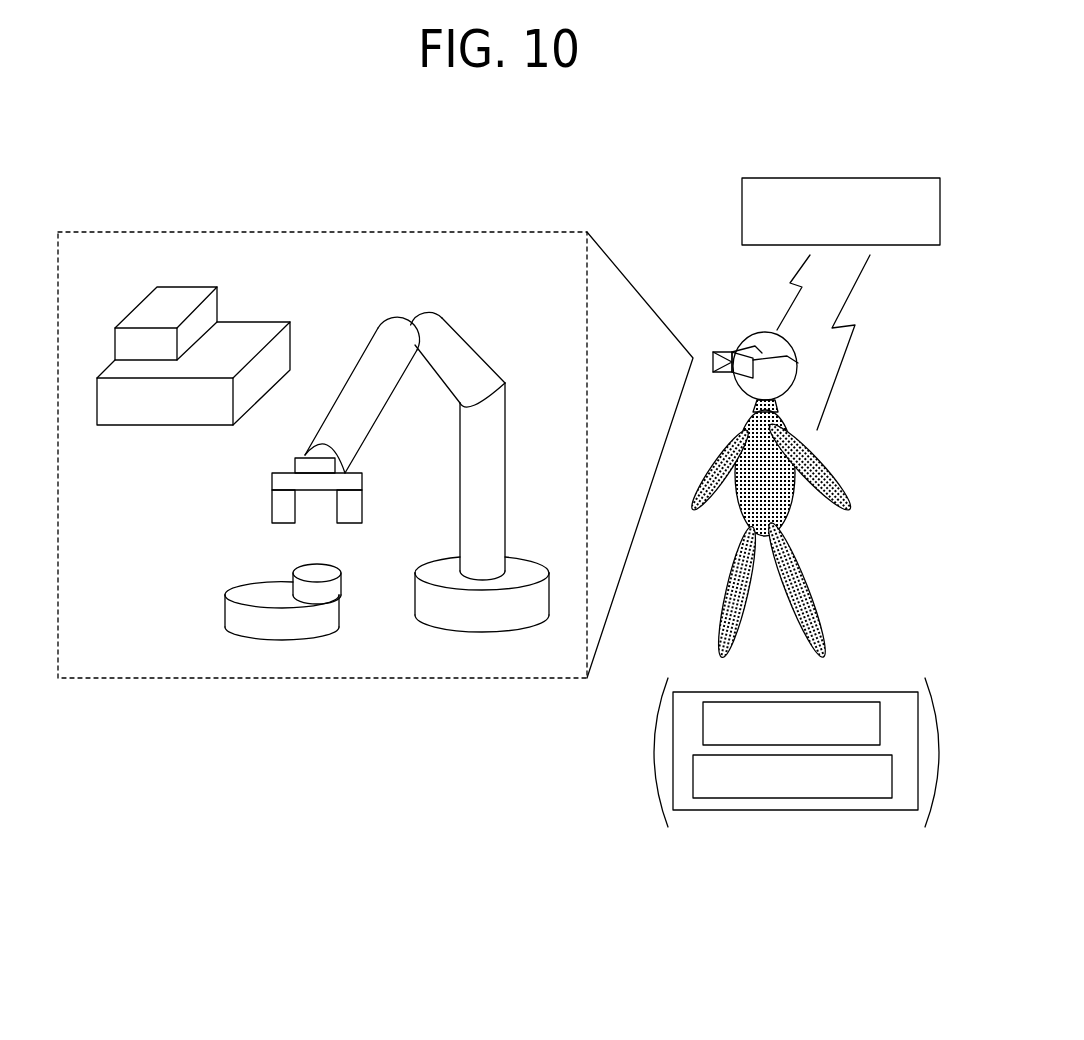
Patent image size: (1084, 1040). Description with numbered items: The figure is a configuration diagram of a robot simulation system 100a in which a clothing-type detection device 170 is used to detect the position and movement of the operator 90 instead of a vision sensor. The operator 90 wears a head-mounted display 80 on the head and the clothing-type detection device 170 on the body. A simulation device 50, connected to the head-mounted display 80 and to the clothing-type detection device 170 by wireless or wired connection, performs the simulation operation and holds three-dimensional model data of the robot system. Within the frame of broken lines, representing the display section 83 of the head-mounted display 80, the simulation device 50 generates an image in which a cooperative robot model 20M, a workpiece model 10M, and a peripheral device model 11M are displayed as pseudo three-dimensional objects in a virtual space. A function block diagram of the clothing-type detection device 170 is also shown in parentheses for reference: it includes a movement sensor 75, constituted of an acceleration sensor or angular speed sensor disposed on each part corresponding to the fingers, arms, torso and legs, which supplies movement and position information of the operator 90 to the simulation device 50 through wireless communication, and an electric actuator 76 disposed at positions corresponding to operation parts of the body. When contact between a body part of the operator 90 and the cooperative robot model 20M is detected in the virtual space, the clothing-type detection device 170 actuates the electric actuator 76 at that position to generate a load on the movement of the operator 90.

The display section 83 is at (432, 232).
The robot simulation system 100a is at (670, 164).
The peripheral device model 11M is at (197, 425).
The cooperative robot model 20M is at (517, 439).
The workpiece model 10M is at (293, 642).
The simulation device 50 is at (893, 178).
The head-mounted display 80 is at (729, 333).
The operator 90 is at (747, 422).
The clothing-type detection device 170 is at (796, 698).
The movement sensor 75 is at (852, 700).
The electric actuator 76 is at (882, 800).